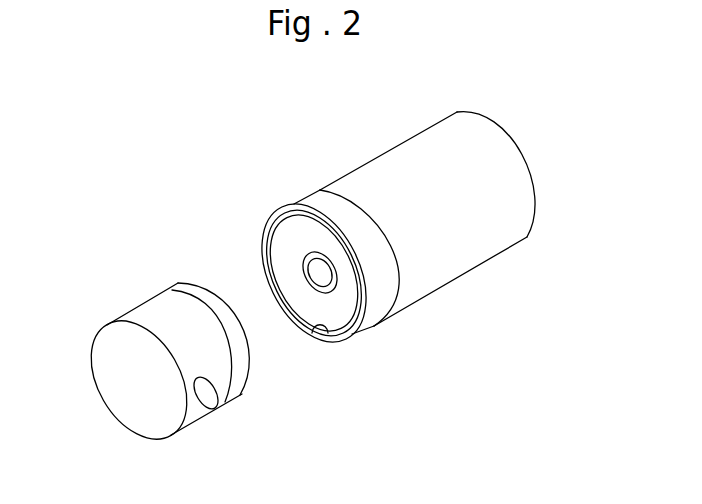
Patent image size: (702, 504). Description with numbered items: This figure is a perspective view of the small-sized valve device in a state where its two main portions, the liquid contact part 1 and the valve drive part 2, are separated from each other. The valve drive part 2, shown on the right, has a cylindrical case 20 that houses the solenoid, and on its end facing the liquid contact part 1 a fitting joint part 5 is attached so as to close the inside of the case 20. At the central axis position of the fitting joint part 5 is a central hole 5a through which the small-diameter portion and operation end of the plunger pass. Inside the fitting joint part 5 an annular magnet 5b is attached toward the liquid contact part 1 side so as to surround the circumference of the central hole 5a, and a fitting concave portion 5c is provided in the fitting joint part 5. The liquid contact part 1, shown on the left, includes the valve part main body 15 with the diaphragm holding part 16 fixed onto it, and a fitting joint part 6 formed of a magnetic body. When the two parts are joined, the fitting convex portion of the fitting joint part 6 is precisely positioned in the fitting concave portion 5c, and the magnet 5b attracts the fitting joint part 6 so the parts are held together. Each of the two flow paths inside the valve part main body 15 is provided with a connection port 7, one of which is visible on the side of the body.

The liquid contact part 1 is at (148, 293).
The valve drive part 2 is at (468, 273).
The fitting joint part 5 is at (292, 204).
The central hole 5a is at (317, 275).
The annular magnet 5b is at (288, 242).
The fitting concave portion 5c is at (332, 338).
The fitting joint part 6 is at (177, 283).
The connection port 7 is at (203, 397).
The valve part main body 15 is at (97, 333).
The diaphragm holding part 16 is at (238, 393).
The case 20 is at (390, 157).